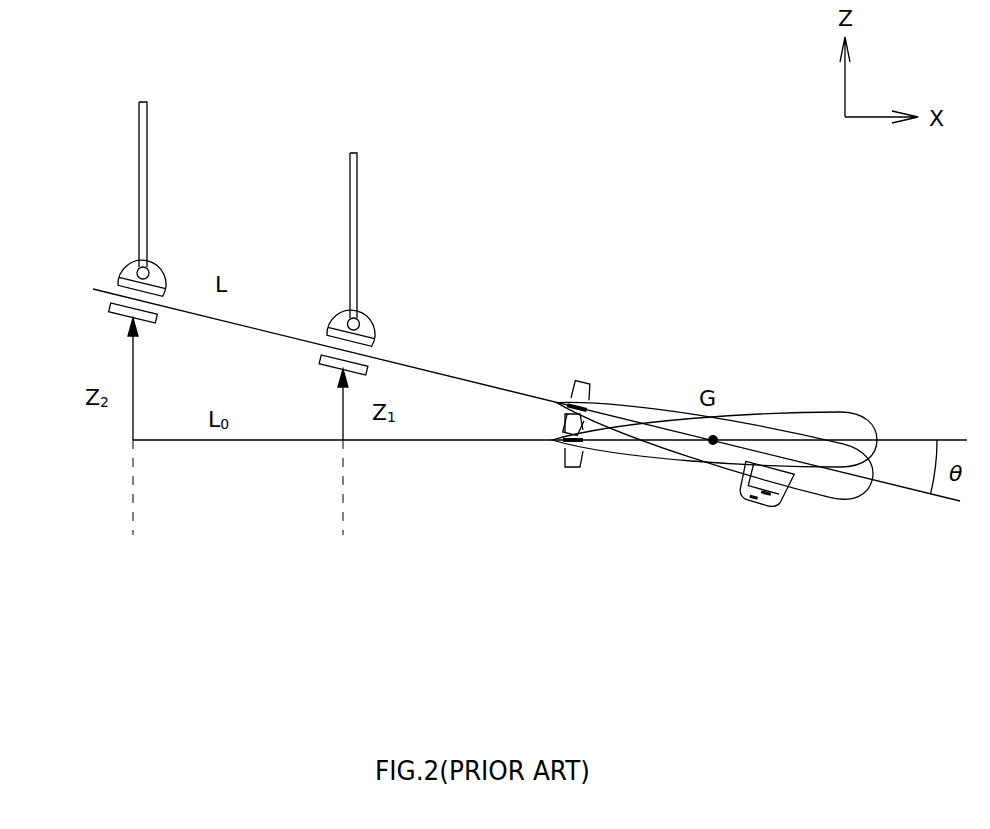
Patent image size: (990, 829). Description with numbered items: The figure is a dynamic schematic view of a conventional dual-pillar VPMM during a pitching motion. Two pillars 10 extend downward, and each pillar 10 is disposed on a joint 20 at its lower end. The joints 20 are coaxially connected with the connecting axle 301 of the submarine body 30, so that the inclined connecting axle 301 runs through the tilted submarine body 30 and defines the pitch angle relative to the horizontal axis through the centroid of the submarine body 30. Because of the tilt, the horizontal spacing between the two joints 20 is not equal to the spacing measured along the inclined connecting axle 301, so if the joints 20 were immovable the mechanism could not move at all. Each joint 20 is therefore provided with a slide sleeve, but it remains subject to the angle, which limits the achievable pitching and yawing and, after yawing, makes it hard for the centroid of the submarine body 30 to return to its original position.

The pillar 10 is at (357, 236).
The joint 20 is at (371, 328).
The connecting axle 301 is at (521, 391).
The submarine body 30 is at (833, 480).